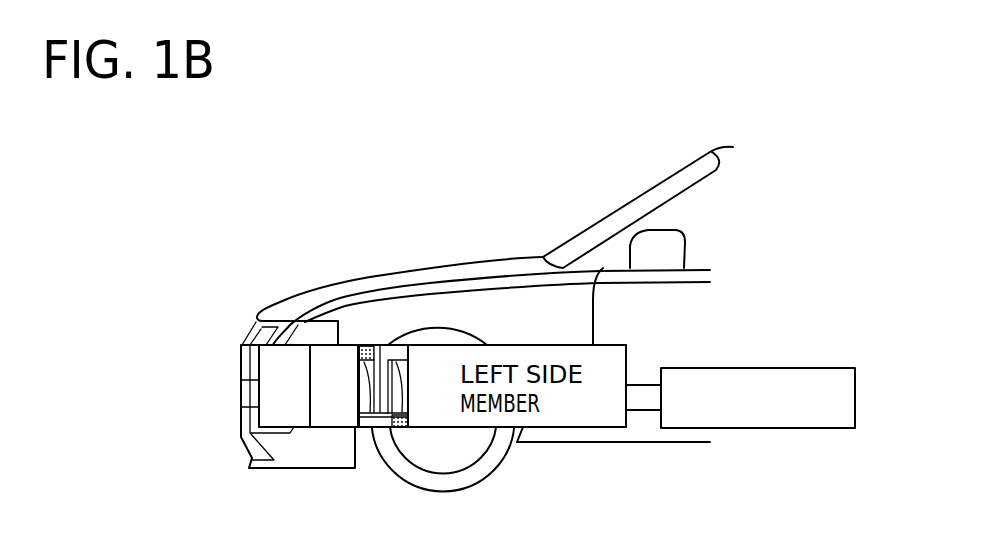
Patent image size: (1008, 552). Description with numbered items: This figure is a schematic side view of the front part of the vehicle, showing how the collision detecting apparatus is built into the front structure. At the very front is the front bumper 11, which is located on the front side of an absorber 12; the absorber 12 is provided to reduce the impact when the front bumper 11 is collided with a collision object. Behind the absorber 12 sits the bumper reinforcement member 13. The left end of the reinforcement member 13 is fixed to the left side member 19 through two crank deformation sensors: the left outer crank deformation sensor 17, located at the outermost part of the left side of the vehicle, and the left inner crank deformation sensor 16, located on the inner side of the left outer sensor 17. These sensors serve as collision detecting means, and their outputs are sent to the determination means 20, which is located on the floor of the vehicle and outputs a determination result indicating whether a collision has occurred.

The front bumper 11 is at (263, 459).
The absorber 12 is at (284, 320).
The bumper reinforcement member 13 is at (325, 345).
The left inner crank deformation sensor 16 is at (367, 345).
The left outer crank deformation sensor 17 is at (373, 428).
The left side member 19 is at (513, 344).
The determination means 20 is at (813, 368).